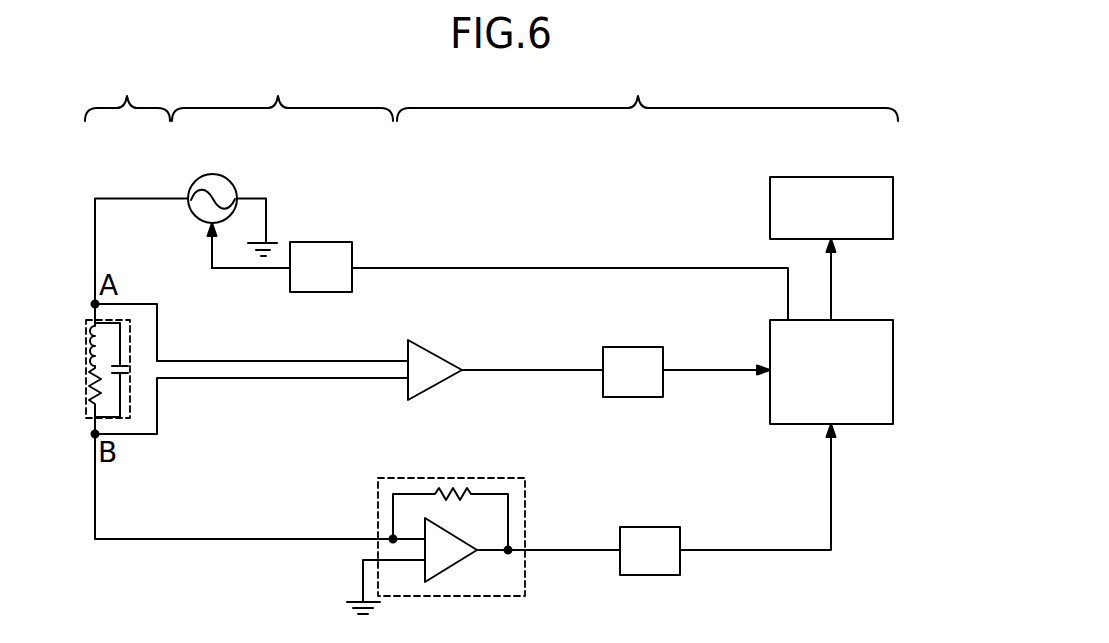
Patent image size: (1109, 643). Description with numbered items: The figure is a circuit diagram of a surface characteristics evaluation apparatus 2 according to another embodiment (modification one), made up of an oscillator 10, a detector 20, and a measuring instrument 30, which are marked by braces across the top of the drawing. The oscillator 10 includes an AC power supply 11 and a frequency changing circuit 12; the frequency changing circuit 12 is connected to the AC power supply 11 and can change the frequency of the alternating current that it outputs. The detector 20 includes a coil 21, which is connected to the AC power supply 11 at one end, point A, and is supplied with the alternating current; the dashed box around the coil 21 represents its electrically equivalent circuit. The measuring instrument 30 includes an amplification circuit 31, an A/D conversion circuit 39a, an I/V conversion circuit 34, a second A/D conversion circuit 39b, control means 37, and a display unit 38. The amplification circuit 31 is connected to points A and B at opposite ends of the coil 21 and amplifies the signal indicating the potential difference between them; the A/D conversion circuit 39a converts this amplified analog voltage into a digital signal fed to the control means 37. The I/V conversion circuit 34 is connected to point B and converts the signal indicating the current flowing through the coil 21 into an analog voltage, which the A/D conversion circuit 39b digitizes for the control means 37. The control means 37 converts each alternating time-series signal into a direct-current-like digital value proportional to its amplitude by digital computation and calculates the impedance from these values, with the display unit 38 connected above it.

The surface characteristics evaluation apparatus 2 is at (900, 52).
The oscillator 10 is at (282, 94).
The AC power supply 11 is at (227, 181).
The frequency changing circuit 12 is at (333, 242).
The detector 20 is at (127, 94).
The coil 21 is at (130, 338).
The measuring instrument 30 is at (647, 94).
The amplification circuit 31 is at (430, 352).
The I/V conversion circuit 34 is at (506, 478).
The control means 37 is at (893, 341).
The display unit 38 is at (893, 189).
The A/D conversion circuit 39a is at (650, 347).
The A/D conversion circuit 39b is at (650, 527).